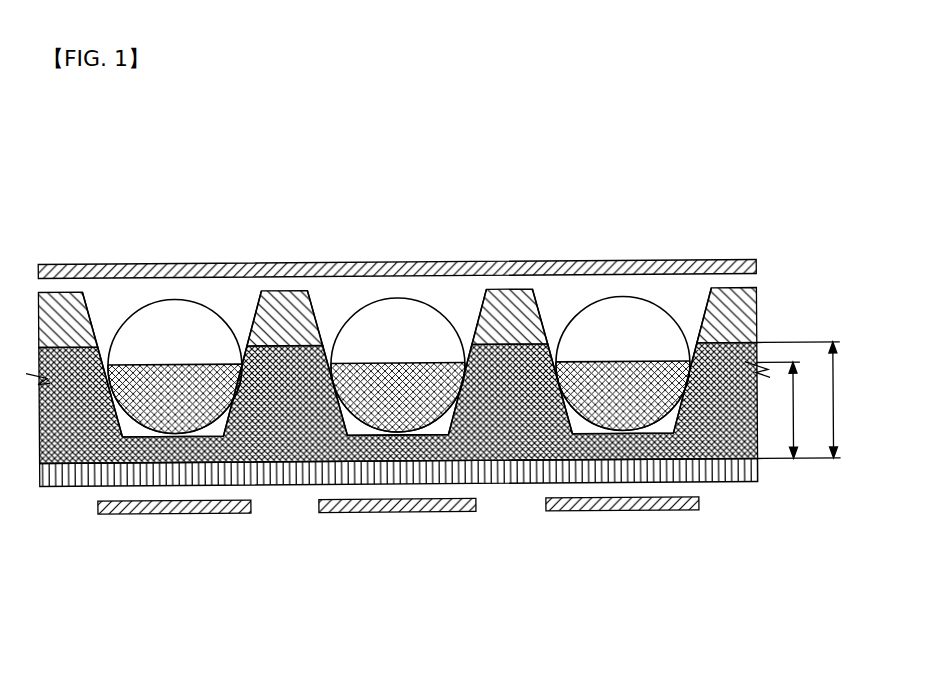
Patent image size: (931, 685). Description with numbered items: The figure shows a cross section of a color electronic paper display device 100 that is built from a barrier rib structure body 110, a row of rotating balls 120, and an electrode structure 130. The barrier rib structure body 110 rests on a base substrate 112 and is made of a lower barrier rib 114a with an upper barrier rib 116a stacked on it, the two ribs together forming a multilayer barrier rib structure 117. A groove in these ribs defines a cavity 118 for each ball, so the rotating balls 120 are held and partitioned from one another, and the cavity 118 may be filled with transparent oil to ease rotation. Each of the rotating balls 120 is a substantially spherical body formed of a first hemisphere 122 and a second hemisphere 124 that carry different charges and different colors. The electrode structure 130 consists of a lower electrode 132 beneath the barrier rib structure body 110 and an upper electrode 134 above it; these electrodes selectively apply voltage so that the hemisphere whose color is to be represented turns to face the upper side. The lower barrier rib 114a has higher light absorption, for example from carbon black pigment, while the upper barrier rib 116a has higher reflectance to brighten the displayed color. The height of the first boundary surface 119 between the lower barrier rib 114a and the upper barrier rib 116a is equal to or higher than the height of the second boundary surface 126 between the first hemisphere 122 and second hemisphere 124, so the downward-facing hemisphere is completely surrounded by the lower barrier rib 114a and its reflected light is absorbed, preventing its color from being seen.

The color electronic paper display device 100 is at (88, 121).
The barrier rib structure body 110 is at (245, 625).
The base substrate 112 is at (218, 472).
The lower barrier rib 114a is at (152, 446).
The upper barrier rib 116a is at (80, 331).
The multilayer barrier rib structure 117 is at (185, 576).
The cavity 118 is at (92, 311).
The first boundary surface 119 is at (62, 331).
The rotating balls 120 is at (703, 190).
The first hemisphere 122 is at (620, 343).
The second hemisphere 124 is at (648, 361).
The second boundary surface 126 is at (583, 361).
The electrode structure 130 is at (600, 575).
The lower electrode 132 is at (575, 503).
The upper electrode 134 is at (513, 264).